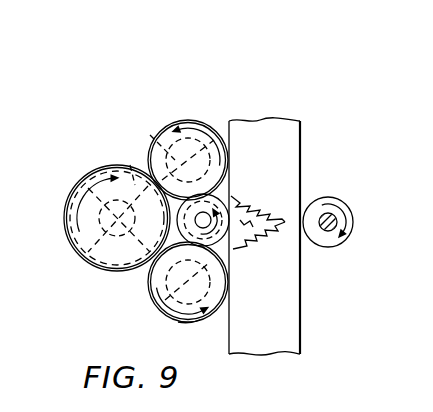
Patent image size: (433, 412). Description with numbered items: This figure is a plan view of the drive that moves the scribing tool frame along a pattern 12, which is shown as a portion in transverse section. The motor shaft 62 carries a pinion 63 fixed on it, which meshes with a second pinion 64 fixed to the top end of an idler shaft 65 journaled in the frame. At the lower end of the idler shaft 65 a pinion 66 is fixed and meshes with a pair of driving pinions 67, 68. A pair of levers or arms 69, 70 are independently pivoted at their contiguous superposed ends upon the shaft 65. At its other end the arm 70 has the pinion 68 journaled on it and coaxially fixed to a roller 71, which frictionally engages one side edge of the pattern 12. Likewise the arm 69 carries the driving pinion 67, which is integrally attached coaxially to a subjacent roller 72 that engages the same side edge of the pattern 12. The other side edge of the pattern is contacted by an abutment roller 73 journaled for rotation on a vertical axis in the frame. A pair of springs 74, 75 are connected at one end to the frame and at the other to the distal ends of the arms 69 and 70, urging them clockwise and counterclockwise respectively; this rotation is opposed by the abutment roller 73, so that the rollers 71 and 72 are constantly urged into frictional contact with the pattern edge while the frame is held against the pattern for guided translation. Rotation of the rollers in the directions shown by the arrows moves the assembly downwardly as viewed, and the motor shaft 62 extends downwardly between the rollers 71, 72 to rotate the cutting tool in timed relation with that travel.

The pattern 12 is at (287, 320).
The motor shaft 62 is at (205, 219).
The pinion 63 is at (232, 222).
The second pinion 64 is at (76, 248).
The idler shaft 65 is at (99, 262).
The pinion 66 is at (65, 214).
The driving pinion 67 is at (168, 138).
The driving pinion 68 is at (163, 306).
The arm 69 is at (130, 165).
The arm 70 is at (150, 283).
The roller 71 is at (178, 322).
The roller 72 is at (183, 120).
The abutment roller 73 is at (332, 237).
The spring 74 is at (252, 249).
The spring 75 is at (258, 212).